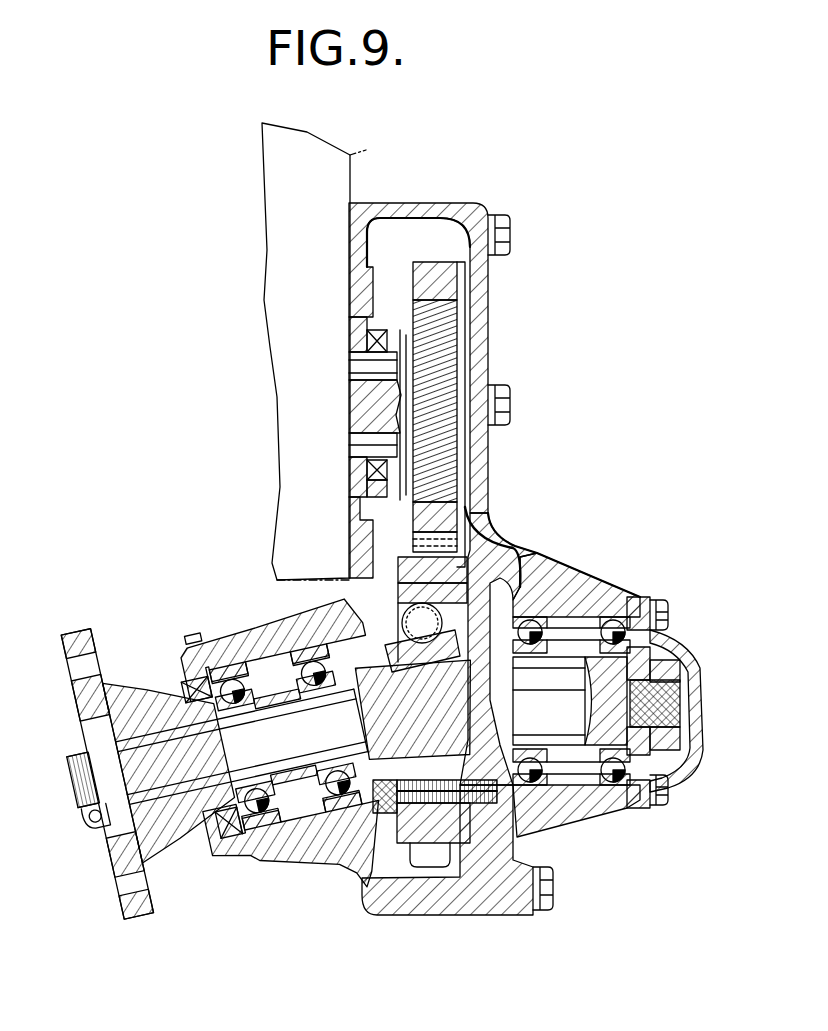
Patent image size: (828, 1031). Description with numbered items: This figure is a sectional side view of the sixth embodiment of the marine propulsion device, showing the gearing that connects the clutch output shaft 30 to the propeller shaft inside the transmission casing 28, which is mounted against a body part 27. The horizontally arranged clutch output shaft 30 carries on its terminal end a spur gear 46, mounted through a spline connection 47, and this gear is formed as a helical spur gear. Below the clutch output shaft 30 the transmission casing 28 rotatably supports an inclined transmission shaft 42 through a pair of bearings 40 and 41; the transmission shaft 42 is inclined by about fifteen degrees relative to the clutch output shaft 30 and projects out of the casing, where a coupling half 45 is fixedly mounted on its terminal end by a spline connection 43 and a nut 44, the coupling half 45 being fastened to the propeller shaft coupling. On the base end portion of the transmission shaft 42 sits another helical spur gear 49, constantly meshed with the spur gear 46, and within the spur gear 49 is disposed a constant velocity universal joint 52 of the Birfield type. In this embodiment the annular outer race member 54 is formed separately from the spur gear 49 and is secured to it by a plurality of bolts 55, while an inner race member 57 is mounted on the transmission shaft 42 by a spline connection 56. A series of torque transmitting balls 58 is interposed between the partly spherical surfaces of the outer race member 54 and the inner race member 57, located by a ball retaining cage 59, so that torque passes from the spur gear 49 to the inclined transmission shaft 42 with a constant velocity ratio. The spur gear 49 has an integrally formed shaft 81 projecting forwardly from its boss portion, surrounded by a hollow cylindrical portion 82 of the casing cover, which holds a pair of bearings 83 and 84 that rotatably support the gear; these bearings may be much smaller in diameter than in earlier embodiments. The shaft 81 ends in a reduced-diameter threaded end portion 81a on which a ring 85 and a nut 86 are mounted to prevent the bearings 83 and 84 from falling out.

The vehicle body 27 is at (330, 177).
The transmission casing 28 is at (415, 205).
The clutch output shaft 30 is at (368, 417).
The bearing 40 is at (272, 607).
The bearing 41 is at (245, 862).
The transmission shaft 42 is at (305, 840).
The spline connection 43 is at (158, 725).
The nut 44 is at (95, 823).
The coupling half 45 is at (86, 632).
The spur gear 46 is at (437, 270).
The spline connection 47 is at (365, 370).
The spur gear 49 is at (422, 855).
The constant velocity universal joint 52 is at (390, 603).
The outer race member 54 is at (483, 515).
The bolt 55 is at (520, 845).
The spline connection 56 is at (517, 800).
The inner race member 57 is at (390, 822).
The torque transmitting ball 58 is at (405, 613).
The ball retaining member or cage 59 is at (511, 550).
The shaft 81 is at (558, 683).
The threaded end portion 81a is at (692, 745).
The hollow cylindrical portion 82 is at (603, 795).
The bearing 83 is at (642, 605).
The bearing 84 is at (552, 587).
The ring 85 is at (650, 790).
The nut 86 is at (668, 652).